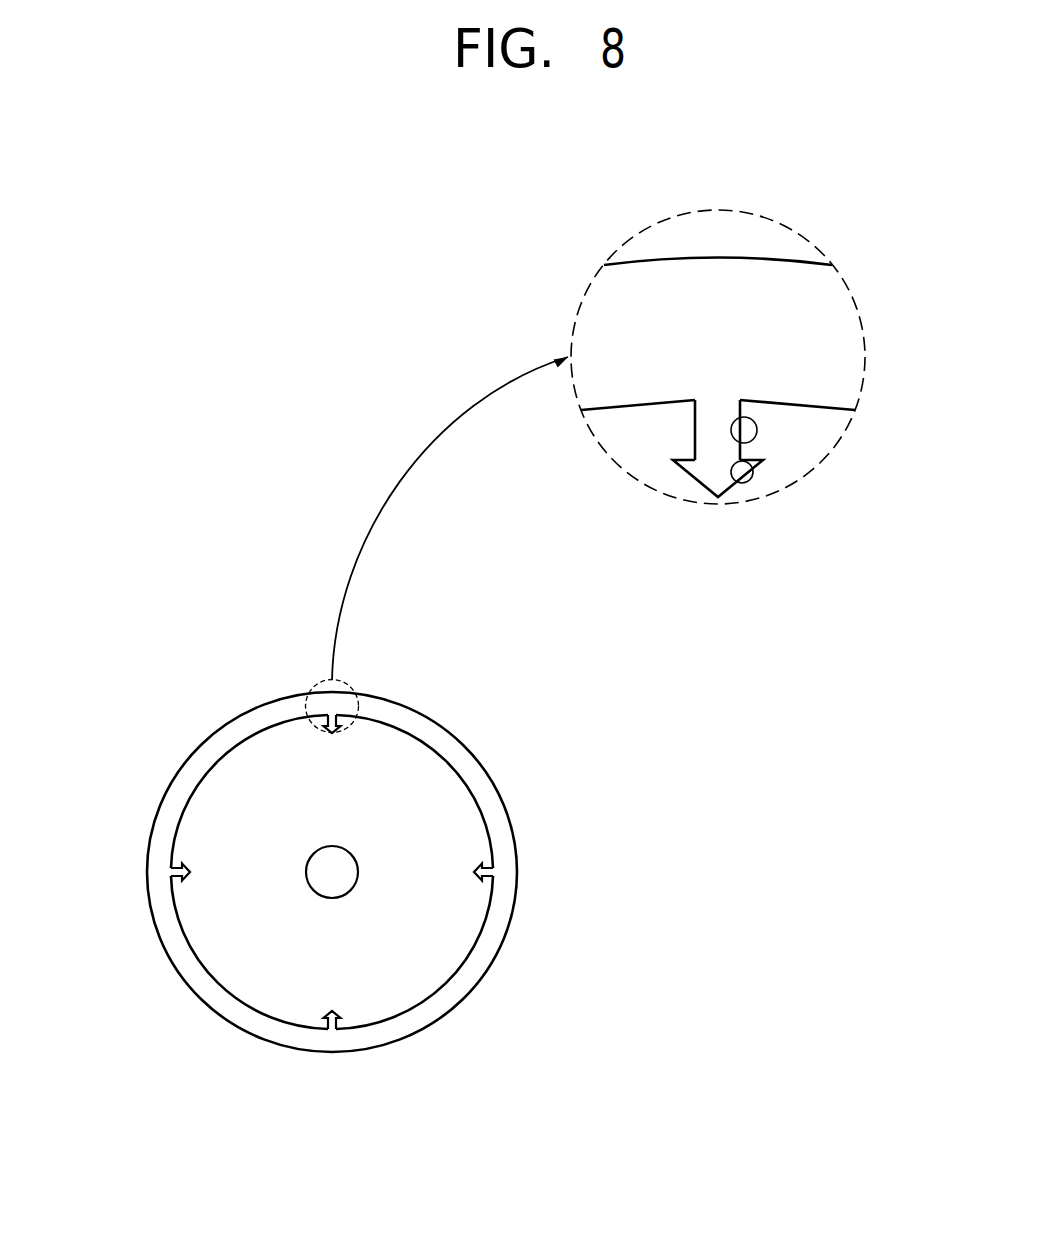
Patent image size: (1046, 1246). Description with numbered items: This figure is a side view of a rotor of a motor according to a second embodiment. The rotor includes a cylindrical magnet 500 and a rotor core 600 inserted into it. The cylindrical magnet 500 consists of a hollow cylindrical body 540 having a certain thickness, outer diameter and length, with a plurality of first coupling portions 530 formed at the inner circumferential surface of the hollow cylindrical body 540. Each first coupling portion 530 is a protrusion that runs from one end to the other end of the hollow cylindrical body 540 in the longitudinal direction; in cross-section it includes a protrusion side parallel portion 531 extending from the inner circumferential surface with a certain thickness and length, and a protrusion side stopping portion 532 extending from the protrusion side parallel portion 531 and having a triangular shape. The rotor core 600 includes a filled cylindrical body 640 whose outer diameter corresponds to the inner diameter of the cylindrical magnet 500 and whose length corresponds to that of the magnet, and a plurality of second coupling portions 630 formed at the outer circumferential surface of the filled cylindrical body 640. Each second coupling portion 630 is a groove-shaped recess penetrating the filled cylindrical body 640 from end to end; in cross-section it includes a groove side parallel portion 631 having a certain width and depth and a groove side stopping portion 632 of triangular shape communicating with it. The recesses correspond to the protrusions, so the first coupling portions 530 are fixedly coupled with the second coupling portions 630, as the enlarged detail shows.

The cylindrical magnet 500 is at (505, 768).
The first coupling portion 530 is at (620, 636).
The protrusion side parallel portion 531 is at (713, 433).
The protrusion side stopping portion 532 is at (717, 473).
The hollow cylindrical body 540 is at (167, 823).
The rotor core 600 is at (235, 1000).
The second coupling portion 630 is at (898, 563).
The groove side parallel portion 631 is at (749, 419).
The groove side stopping portion 632 is at (754, 468).
The filled cylindrical body 640 is at (415, 853).